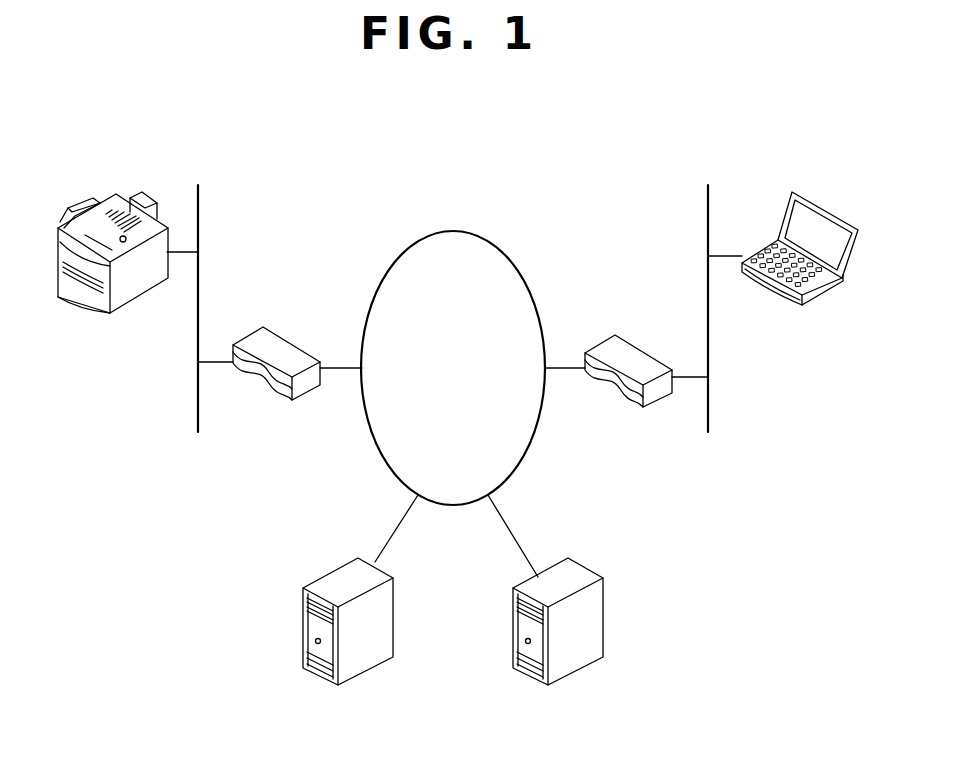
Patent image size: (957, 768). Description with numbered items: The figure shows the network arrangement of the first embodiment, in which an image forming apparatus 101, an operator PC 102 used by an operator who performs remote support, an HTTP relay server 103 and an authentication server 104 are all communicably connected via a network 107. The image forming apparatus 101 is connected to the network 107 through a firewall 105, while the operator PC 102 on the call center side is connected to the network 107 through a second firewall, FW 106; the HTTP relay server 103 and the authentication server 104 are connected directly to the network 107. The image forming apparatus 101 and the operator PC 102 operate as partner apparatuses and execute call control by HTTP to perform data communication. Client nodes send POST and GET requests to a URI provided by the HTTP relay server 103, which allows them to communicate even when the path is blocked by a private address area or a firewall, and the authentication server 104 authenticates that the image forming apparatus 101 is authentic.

The image forming apparatus 101 is at (145, 197).
The operator PC 102 is at (827, 206).
The HTTP relay server 103 is at (396, 612).
The authentication server 104 is at (606, 612).
The firewall 105 is at (280, 336).
The FW 106 is at (638, 349).
The network 107 is at (493, 247).